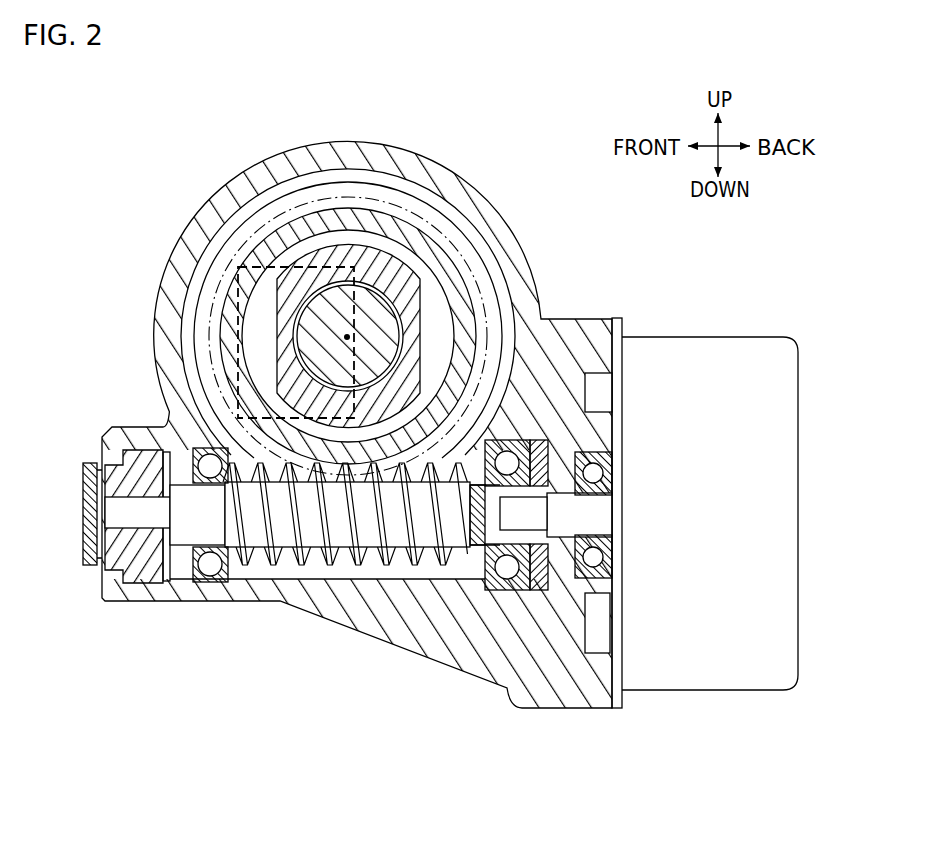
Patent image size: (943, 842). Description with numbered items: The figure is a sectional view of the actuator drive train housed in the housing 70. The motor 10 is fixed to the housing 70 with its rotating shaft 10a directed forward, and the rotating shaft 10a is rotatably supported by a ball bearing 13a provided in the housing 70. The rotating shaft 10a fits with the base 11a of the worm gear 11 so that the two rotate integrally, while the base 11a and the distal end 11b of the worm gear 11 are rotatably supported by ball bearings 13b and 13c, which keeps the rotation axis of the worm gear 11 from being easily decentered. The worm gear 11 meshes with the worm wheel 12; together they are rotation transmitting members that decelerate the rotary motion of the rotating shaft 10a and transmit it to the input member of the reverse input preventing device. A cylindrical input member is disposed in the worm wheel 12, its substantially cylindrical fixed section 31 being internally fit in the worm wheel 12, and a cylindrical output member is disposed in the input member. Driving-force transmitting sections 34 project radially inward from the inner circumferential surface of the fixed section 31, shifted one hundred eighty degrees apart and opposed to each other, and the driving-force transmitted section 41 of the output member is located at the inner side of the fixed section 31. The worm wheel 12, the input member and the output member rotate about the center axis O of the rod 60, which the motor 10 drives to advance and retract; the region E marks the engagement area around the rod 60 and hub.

The motor 10 is at (712, 670).
The rotating shaft 10a is at (530, 518).
The worm gear 11 is at (350, 560).
The base 11a is at (492, 537).
The distal end 11b is at (183, 524).
The worm wheel 12 is at (460, 249).
The ball bearing 13a is at (603, 453).
The ball bearing 13b is at (507, 593).
The ball bearing 13c is at (212, 585).
The fixed section 31 is at (335, 240).
The driving-force transmitting sections 34 is at (425, 325).
The driving-force transmitted section 41 is at (235, 241).
The rod 60 is at (317, 353).
The housing 70 is at (563, 332).
The engagement region E is at (236, 287).
The center axis O is at (346, 334).